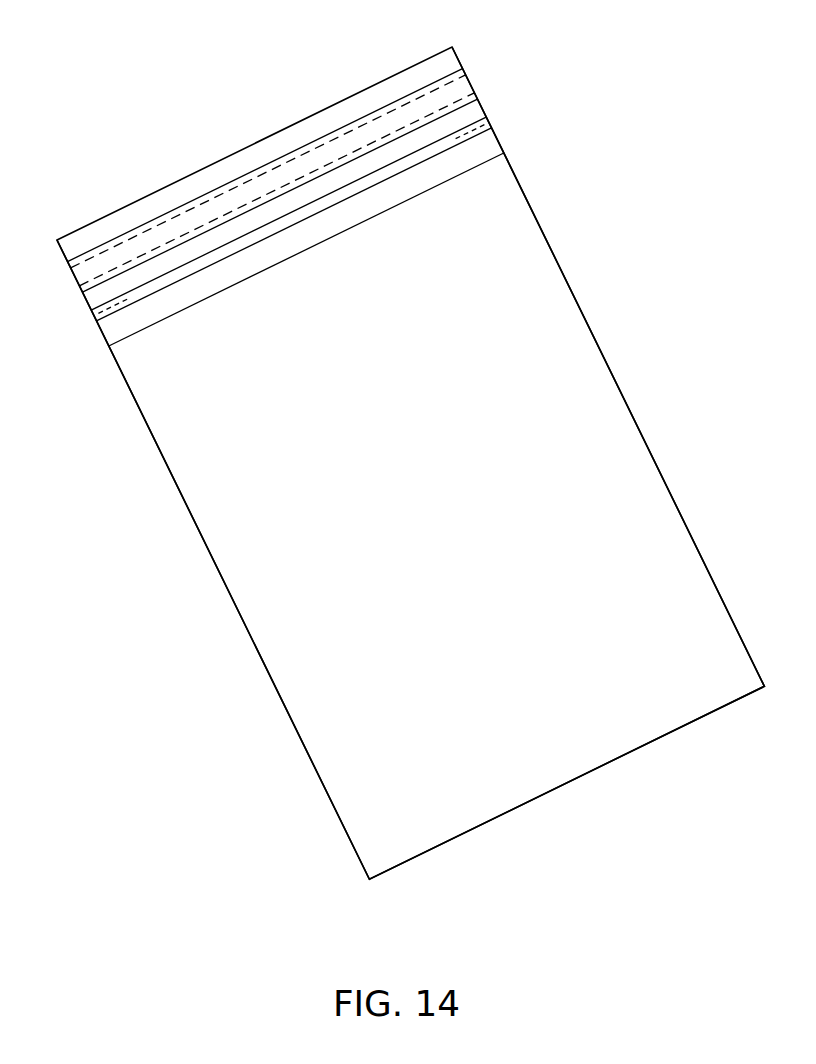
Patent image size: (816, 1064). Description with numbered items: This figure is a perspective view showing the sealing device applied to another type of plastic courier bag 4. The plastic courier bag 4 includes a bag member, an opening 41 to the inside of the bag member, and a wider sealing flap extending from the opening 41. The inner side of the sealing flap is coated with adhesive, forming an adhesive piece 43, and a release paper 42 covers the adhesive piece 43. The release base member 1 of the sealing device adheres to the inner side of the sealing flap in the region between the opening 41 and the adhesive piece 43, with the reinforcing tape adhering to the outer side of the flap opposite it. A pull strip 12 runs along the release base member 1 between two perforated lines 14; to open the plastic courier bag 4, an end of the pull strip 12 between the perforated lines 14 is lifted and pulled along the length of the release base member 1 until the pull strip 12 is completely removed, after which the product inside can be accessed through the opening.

The release base member 1 is at (507, 138).
The plastic courier bag 4 is at (543, 296).
The pull strip 12 is at (332, 202).
The perforated lines 14 is at (470, 115).
The opening 41 is at (400, 201).
The release paper 42 is at (363, 121).
The adhesive piece 43 is at (270, 180).